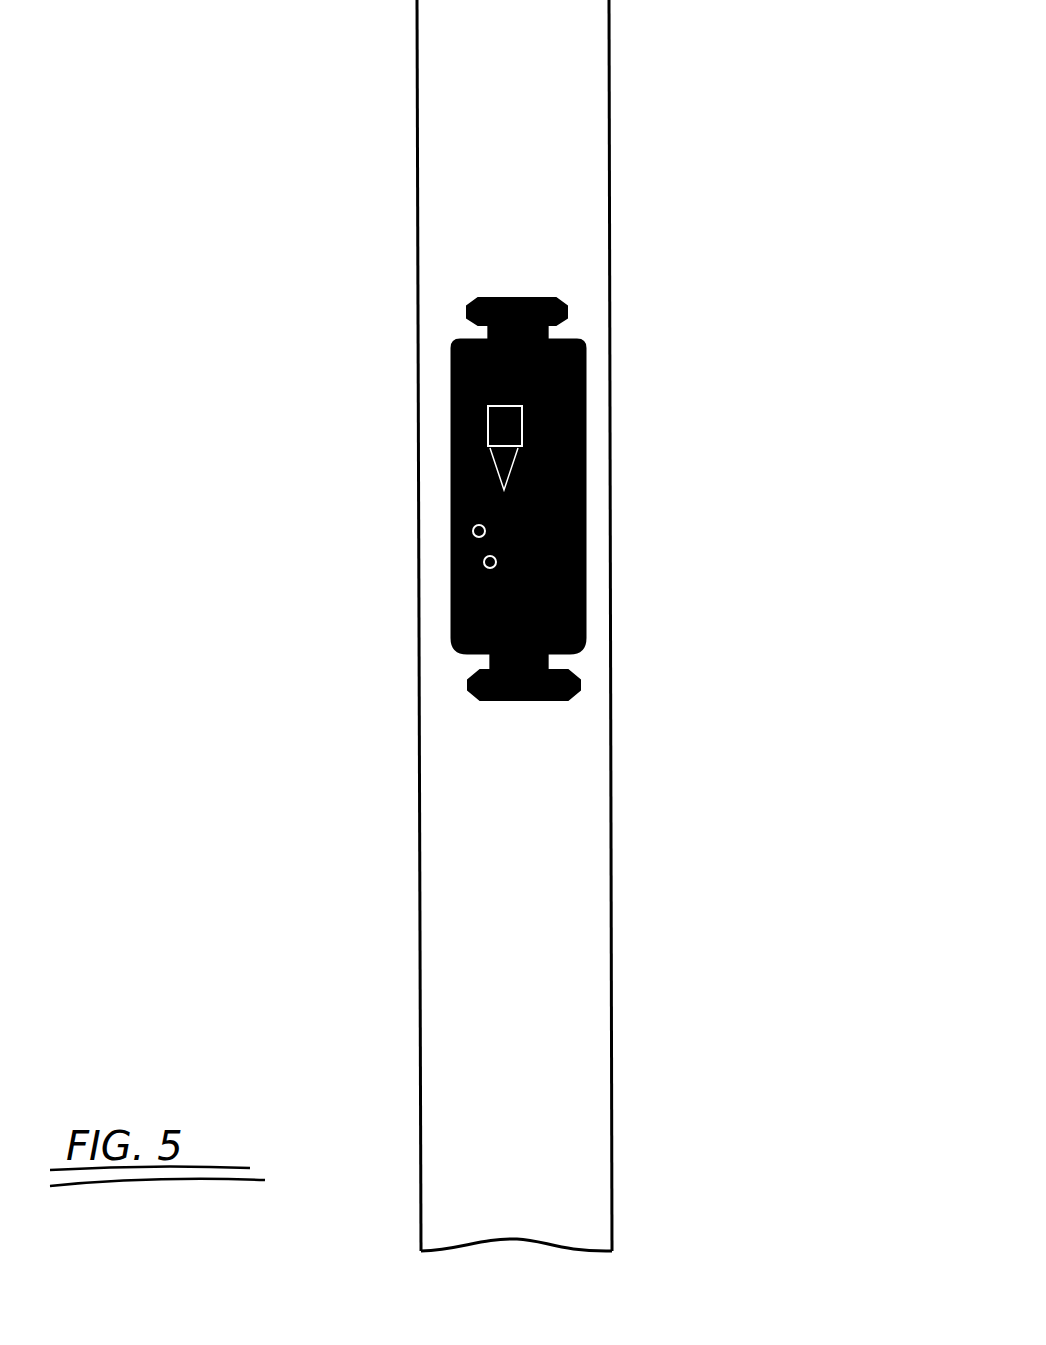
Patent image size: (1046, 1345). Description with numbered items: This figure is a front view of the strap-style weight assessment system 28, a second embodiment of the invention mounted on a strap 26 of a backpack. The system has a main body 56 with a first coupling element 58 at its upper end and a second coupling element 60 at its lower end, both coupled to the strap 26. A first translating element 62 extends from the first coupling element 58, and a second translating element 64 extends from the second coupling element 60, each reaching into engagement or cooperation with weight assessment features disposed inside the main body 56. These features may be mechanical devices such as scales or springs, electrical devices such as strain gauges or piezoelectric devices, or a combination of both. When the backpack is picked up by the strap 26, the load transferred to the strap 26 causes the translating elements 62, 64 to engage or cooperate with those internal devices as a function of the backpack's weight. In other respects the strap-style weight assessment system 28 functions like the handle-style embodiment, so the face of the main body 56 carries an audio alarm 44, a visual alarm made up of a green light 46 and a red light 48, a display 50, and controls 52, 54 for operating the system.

The strap 26 is at (597, 878).
The strap-style weight assessment system 28 is at (648, 248).
The audio alarm 44 is at (583, 572).
The green light 46 is at (452, 575).
The red light 48 is at (452, 535).
The display 50 is at (452, 430).
The control 52 is at (452, 362).
The control 54 is at (452, 465).
The main body 56 is at (586, 440).
The first coupling element 58 is at (503, 298).
The second coupling element 60 is at (537, 700).
The first translating element 62 is at (551, 331).
The second translating element 64 is at (548, 660).